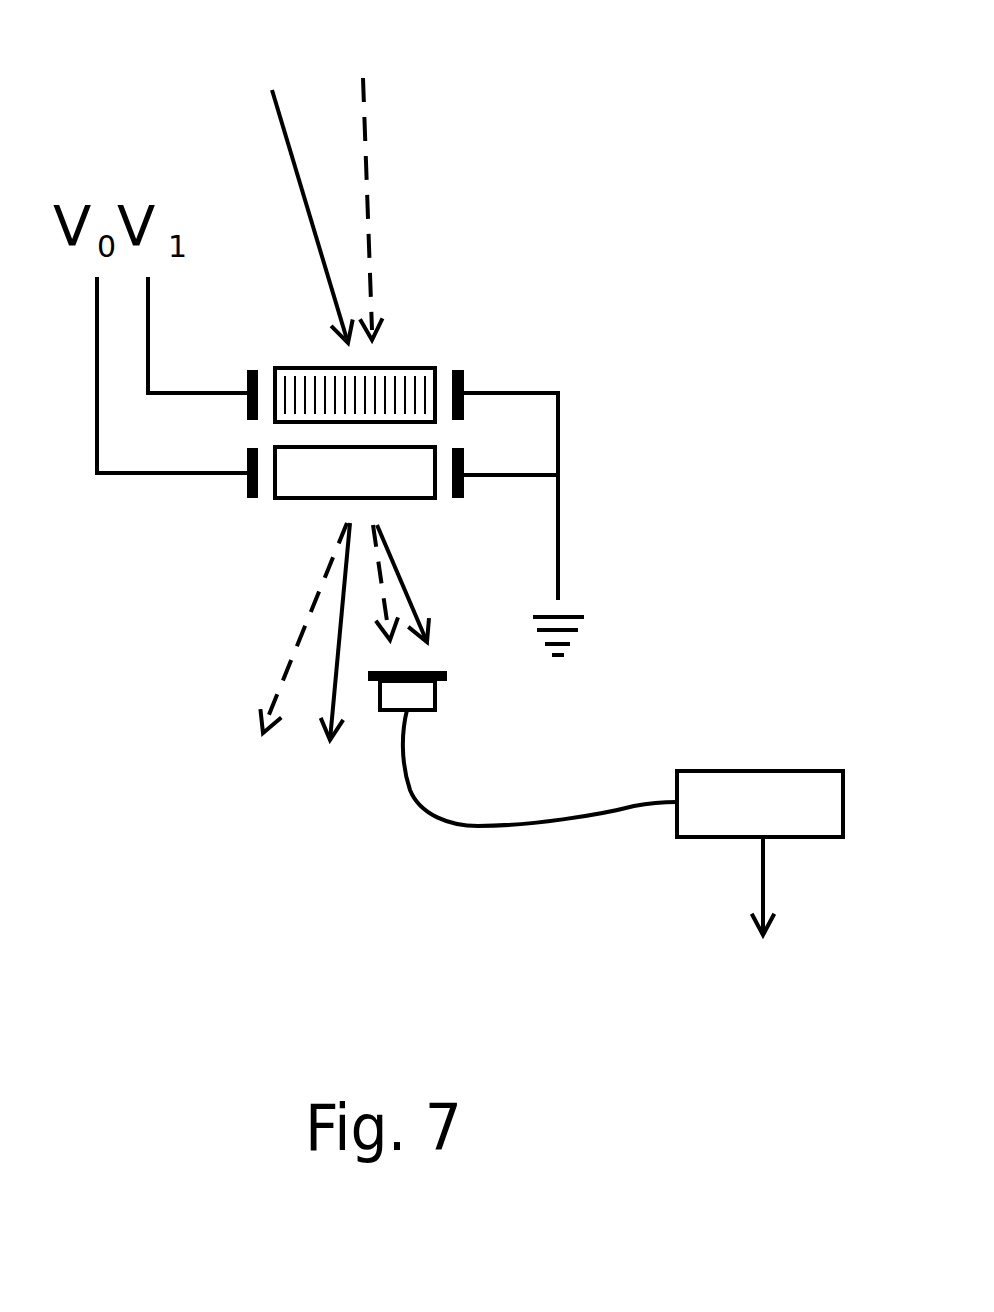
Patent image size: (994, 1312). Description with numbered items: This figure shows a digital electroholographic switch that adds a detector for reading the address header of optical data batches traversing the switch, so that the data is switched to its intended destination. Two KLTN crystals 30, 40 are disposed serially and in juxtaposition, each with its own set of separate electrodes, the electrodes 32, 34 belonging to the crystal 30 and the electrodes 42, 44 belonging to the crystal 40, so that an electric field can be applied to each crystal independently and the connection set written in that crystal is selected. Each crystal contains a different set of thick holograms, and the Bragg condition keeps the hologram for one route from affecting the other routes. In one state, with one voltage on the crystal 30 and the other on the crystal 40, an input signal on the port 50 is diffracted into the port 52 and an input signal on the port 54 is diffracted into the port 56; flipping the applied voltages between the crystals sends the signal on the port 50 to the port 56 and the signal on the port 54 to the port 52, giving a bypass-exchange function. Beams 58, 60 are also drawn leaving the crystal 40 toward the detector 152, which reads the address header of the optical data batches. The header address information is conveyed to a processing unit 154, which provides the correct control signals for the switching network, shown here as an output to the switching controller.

The KLTN crystal 30 is at (407, 353).
The electrode 32 is at (227, 375).
The electrode 34 is at (470, 385).
The KLTN crystal 40 is at (297, 507).
The electrode 42 is at (237, 485).
The electrode 44 is at (470, 495).
The port 50 is at (288, 190).
The port 52 is at (325, 659).
The port 54 is at (362, 180).
The port 56 is at (285, 656).
The deflected light beam 58 is at (428, 601).
The deflected light beam (second polarization) 60 is at (369, 601).
The detector 152 is at (451, 695).
The processing unit 154 is at (770, 907).